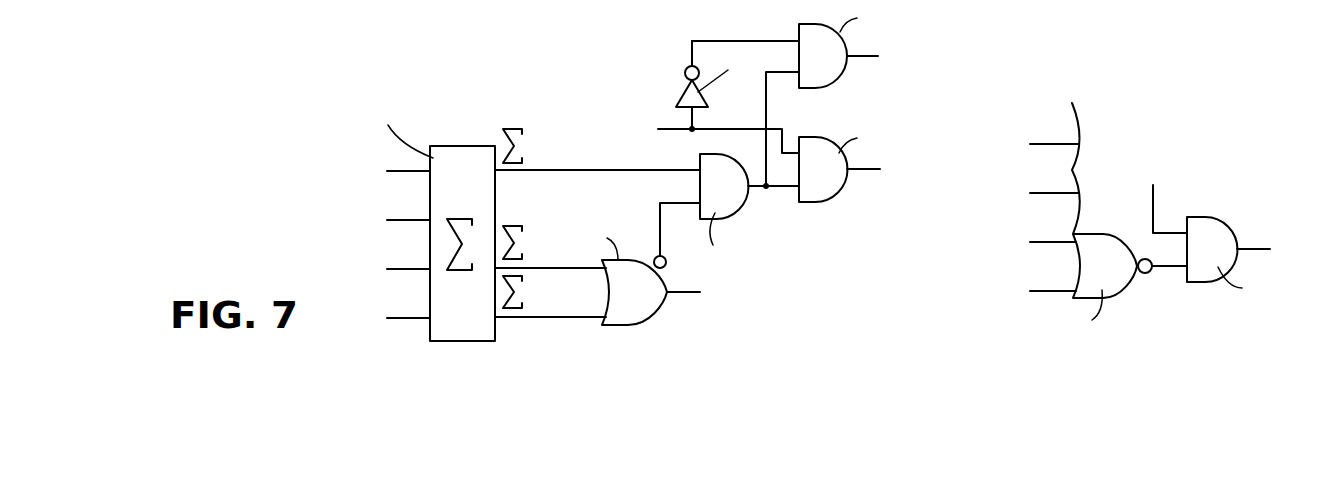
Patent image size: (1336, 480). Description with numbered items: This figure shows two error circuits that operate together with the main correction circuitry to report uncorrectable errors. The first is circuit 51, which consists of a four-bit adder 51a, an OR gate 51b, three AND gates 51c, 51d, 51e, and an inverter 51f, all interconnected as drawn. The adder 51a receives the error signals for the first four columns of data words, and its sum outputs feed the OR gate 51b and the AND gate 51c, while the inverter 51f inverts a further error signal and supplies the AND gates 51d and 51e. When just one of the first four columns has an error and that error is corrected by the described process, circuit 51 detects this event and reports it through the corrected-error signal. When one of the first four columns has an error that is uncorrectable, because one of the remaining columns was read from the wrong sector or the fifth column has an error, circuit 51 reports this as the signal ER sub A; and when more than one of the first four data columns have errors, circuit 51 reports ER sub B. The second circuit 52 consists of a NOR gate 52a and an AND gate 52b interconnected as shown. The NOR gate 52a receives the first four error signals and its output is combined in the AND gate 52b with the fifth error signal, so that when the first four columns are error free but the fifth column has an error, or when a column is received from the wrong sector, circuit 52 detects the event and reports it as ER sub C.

The circuit 51 is at (544, 86).
The four-bit adder 51a is at (465, 148).
The OR gate 51b is at (650, 313).
The AND gate 51c is at (733, 215).
The AND gate 51d is at (825, 197).
The AND gate 51e is at (832, 86).
The inverter 51f is at (685, 92).
The circuit 52 is at (1168, 113).
The NOR gate 52a is at (1123, 288).
The AND gate 52b is at (1220, 217).